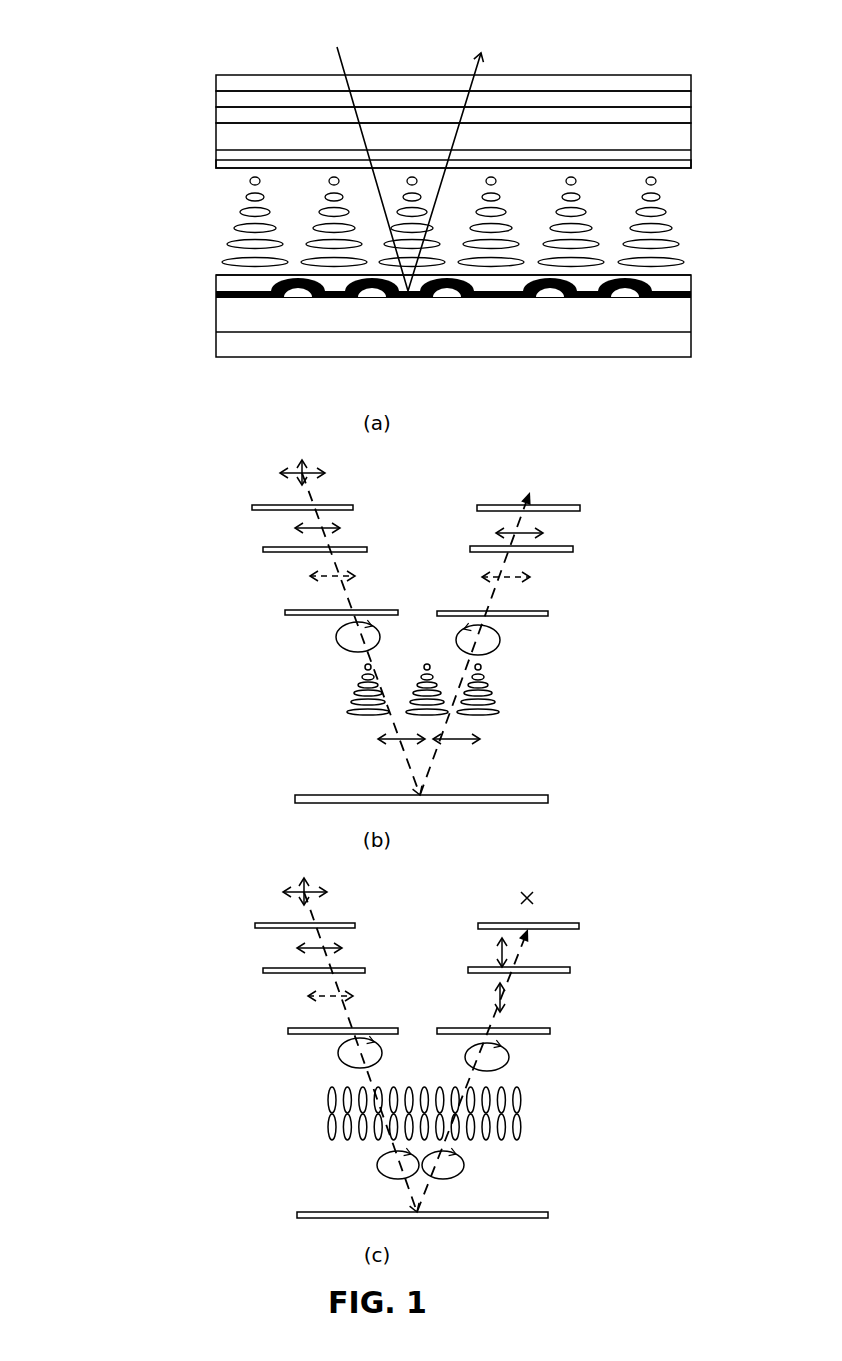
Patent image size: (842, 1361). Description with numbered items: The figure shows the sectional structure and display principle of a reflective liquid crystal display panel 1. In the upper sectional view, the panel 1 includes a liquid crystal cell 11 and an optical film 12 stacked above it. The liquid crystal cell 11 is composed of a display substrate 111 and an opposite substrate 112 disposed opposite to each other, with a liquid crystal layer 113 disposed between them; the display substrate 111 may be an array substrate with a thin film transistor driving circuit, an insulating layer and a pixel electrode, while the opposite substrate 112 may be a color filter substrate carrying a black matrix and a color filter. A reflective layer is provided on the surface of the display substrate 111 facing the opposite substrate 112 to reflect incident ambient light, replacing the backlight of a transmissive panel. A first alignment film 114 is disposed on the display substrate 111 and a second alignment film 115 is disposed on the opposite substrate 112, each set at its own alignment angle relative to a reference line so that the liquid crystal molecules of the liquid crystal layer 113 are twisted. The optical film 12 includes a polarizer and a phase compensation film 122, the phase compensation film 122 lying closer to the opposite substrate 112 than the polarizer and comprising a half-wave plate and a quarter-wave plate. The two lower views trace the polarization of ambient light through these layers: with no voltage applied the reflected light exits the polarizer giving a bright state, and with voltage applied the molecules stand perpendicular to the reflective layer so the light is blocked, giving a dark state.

The reflective liquid crystal display panel 1 is at (139, 28).
The liquid crystal cell 11 is at (150, 143).
The optical film 12 is at (105, 60).
The display substrate 111 is at (207, 277).
The opposite substrate 112 is at (207, 123).
The liquid crystal layer 113 is at (207, 173).
The first alignment film 114 is at (691, 275).
The second alignment film 115 is at (688, 167).
The phase compensation film 122 is at (149, 88).